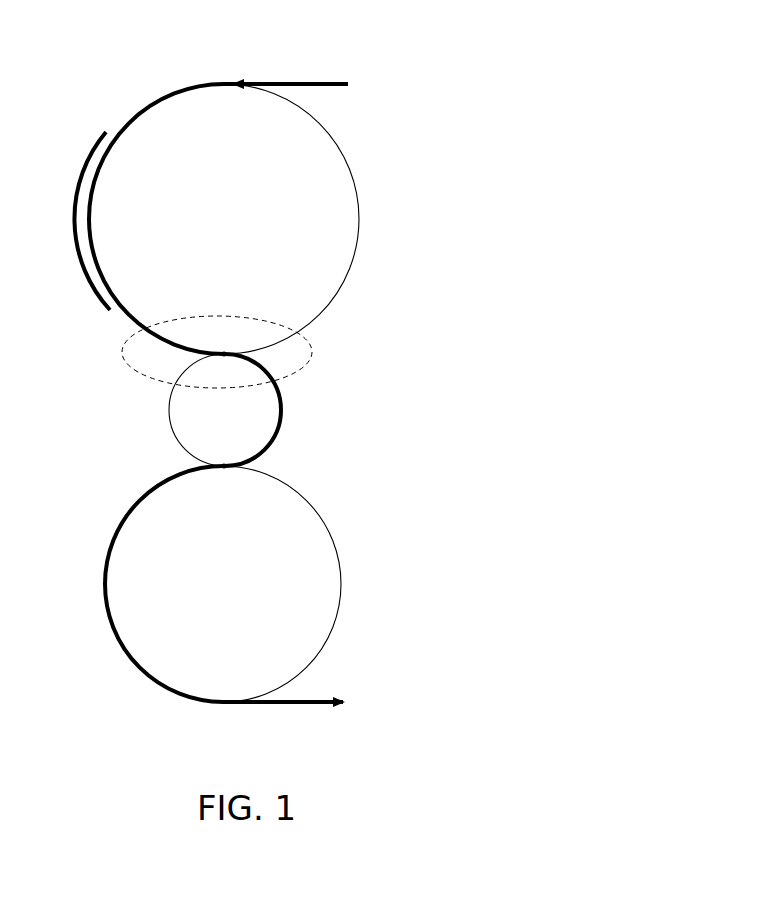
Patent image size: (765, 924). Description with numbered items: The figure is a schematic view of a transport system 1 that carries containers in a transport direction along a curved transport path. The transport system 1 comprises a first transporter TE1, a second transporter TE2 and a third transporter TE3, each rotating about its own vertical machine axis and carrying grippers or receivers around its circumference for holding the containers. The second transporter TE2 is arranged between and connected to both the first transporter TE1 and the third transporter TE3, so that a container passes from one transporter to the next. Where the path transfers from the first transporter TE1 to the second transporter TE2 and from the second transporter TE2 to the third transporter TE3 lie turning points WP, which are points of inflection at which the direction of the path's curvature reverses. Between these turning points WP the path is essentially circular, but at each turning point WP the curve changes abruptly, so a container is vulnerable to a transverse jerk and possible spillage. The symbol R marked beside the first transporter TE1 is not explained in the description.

The transport system 1 is at (391, 108).
The first transporter TE1 is at (361, 215).
The second transporter TE2 is at (172, 428).
The third transporter TE3 is at (341, 562).
The turning point WP is at (226, 346).
The rotation direction R is at (79, 211).